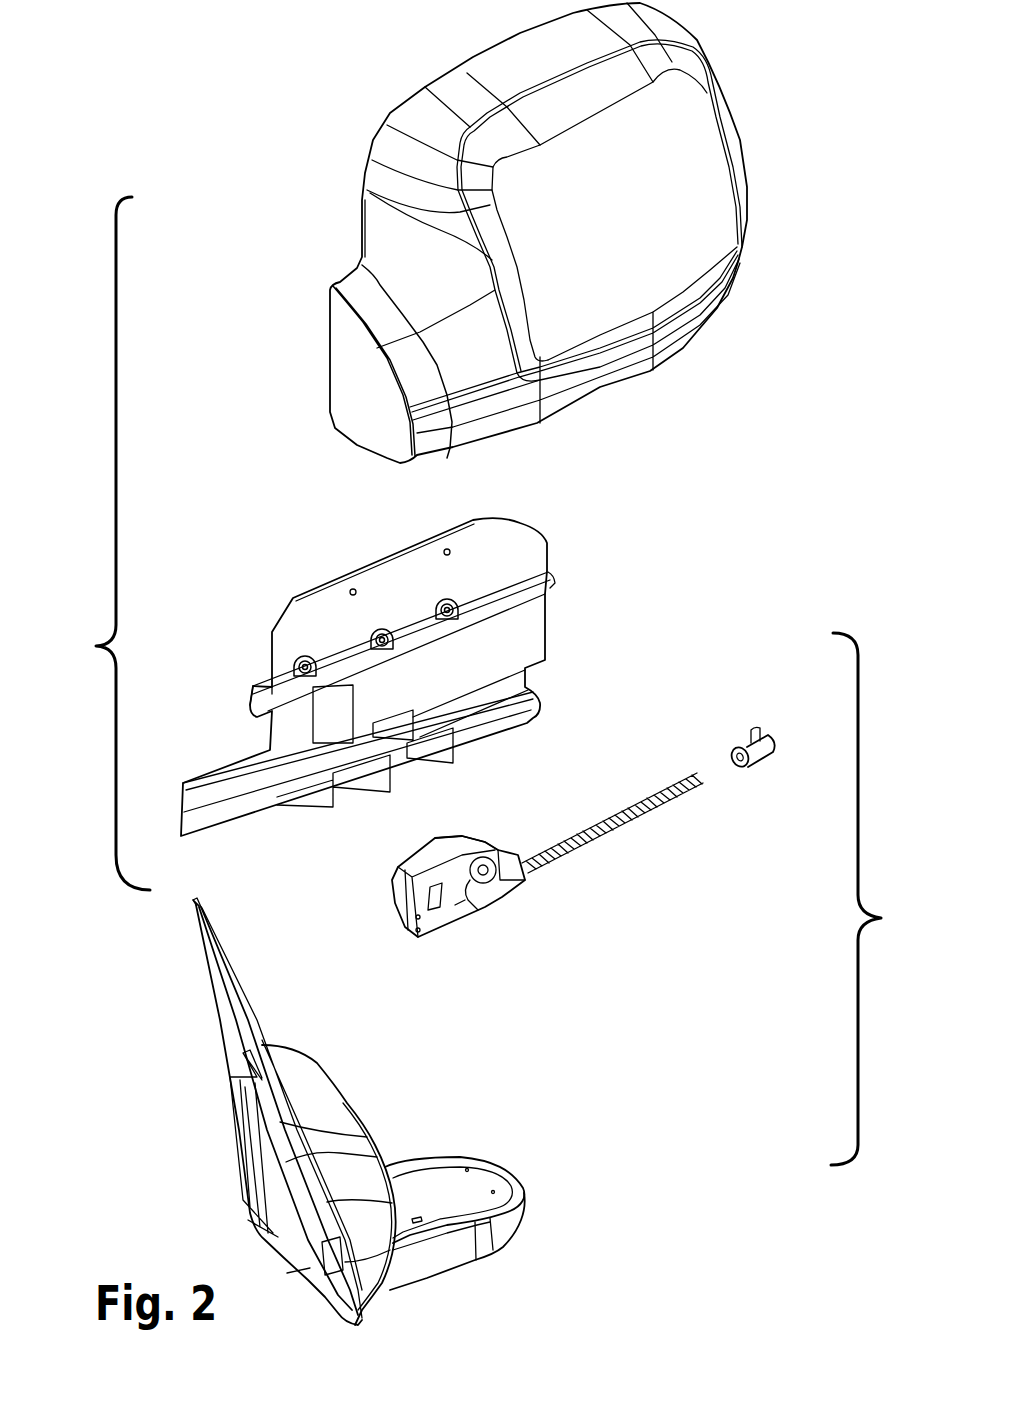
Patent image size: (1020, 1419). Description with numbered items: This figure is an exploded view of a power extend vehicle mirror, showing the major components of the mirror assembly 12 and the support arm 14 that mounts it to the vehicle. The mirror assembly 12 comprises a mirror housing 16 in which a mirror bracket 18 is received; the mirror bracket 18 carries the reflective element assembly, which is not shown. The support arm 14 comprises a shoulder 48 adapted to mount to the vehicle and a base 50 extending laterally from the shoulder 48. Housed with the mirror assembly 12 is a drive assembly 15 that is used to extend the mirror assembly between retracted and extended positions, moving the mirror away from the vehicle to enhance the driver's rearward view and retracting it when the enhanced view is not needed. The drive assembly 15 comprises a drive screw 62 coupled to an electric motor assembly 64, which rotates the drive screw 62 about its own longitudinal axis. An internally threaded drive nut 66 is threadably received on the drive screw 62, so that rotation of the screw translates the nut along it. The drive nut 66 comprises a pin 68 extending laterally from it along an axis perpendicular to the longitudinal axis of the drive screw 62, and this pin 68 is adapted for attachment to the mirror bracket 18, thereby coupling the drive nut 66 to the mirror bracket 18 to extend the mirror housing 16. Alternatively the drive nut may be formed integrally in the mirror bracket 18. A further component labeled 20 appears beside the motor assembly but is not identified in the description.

The mirror assembly 12 is at (93, 646).
The support arm 14 is at (220, 1036).
The drive assembly 15 is at (884, 918).
The mirror housing 16 is at (436, 78).
The mirror bracket 18 is at (338, 577).
The motor 20 is at (418, 903).
The shoulder 48 is at (201, 903).
The base 50 is at (478, 1264).
The drive screw 62 is at (673, 800).
The electric motor assembly 64 is at (460, 830).
The drive nut 66 is at (772, 735).
The pin 68 is at (750, 729).